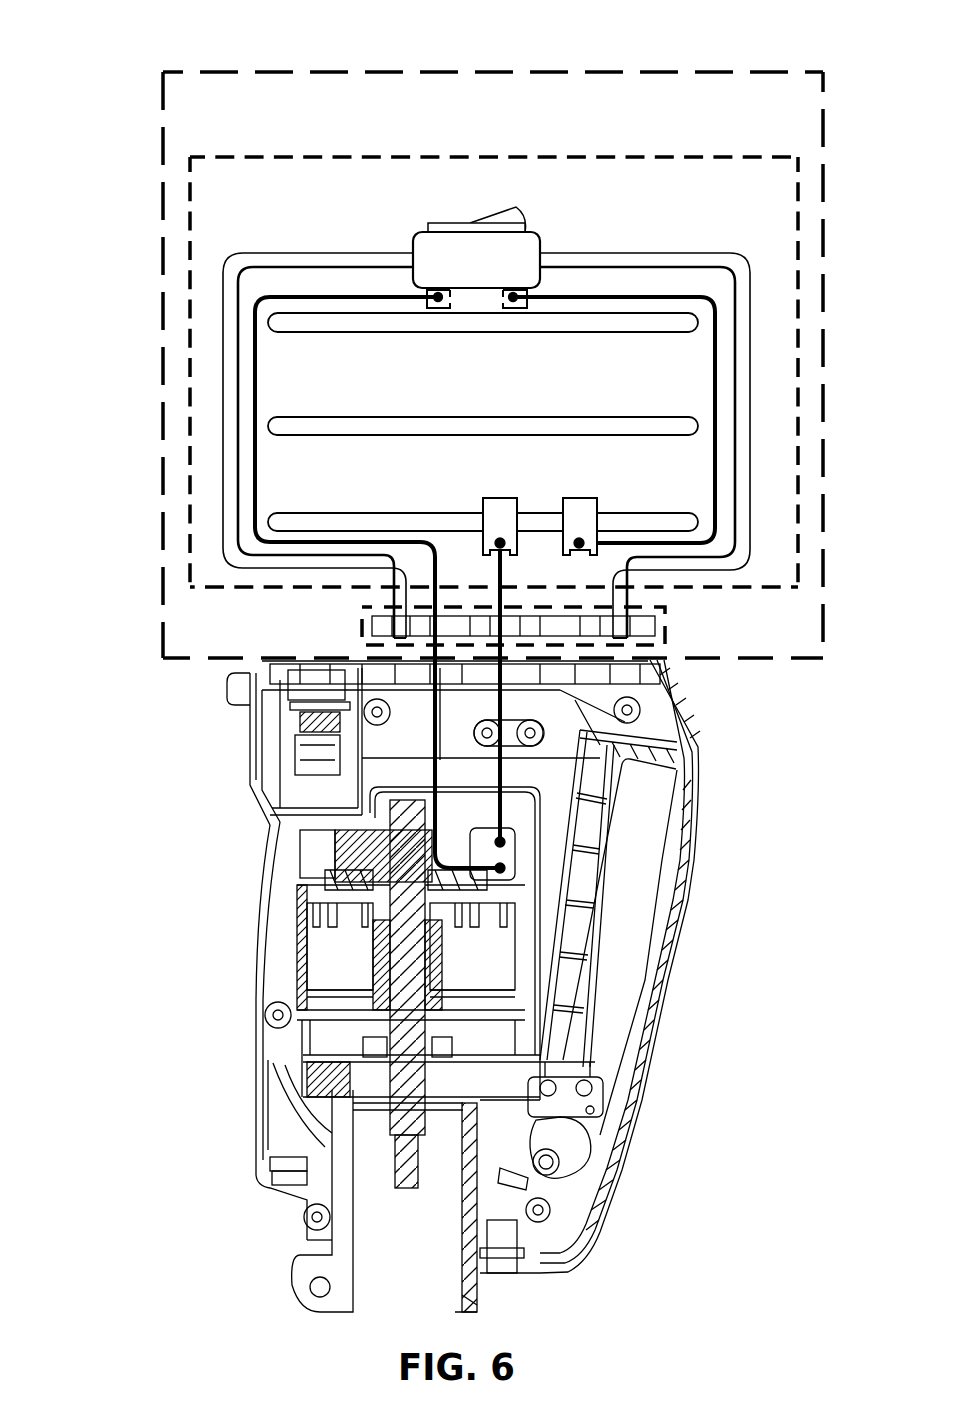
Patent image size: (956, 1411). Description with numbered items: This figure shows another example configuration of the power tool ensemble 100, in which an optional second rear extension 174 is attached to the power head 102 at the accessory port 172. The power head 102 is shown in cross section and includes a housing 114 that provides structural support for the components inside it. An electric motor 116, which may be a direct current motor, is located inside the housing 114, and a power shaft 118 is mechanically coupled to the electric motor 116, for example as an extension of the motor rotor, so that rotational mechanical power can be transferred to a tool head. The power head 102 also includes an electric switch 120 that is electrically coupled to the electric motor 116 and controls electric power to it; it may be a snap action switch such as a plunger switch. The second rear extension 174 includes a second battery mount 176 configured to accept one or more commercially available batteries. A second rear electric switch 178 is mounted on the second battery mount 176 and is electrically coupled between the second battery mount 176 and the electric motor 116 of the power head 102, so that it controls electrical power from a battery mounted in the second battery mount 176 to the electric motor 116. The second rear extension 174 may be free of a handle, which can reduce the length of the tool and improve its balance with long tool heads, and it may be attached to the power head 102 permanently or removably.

The power tool ensemble 100 is at (96, 131).
The power head 102 is at (188, 1081).
The housing 114 is at (672, 945).
The electric motor 116 is at (313, 972).
The power shaft 118 is at (408, 1190).
The electric switch 120 is at (598, 1098).
The accessory port 172 is at (359, 620).
The second rear extension 174 is at (657, 69).
The second battery mount 176 is at (602, 156).
The second rear electric switch 178 is at (412, 244).